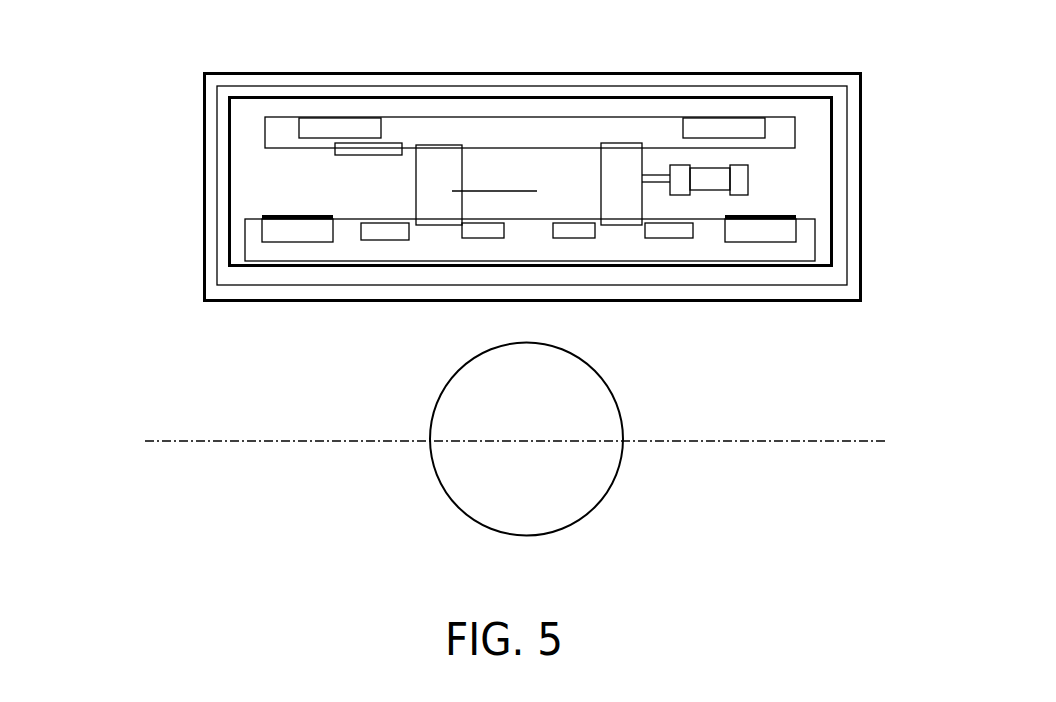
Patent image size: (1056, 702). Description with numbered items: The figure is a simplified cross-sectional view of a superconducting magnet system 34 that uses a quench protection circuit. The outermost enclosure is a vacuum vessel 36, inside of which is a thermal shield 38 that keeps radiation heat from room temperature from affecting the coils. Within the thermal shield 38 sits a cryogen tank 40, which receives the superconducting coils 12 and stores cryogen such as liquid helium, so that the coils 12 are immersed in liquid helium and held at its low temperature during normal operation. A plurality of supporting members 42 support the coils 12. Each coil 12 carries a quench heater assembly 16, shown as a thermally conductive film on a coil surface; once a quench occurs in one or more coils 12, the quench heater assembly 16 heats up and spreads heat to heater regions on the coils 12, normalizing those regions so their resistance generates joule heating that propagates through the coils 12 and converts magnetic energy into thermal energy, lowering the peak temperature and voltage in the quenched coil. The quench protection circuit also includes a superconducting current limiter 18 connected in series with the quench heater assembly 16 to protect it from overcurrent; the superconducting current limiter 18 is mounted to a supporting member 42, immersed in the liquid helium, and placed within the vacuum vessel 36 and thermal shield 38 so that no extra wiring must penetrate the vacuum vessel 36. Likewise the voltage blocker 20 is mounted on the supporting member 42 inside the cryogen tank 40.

The superconducting coil 12 is at (270, 232).
The quench heater assembly 16 is at (322, 213).
The superconducting current limiter 18 is at (737, 177).
The voltage blocker 20 is at (364, 159).
The superconducting magnet system 34 is at (968, 72).
The vacuum vessel 36 is at (610, 72).
The thermal shield 38 is at (715, 88).
The cryogen tank 40 is at (747, 100).
The supporting member 42 is at (605, 203).